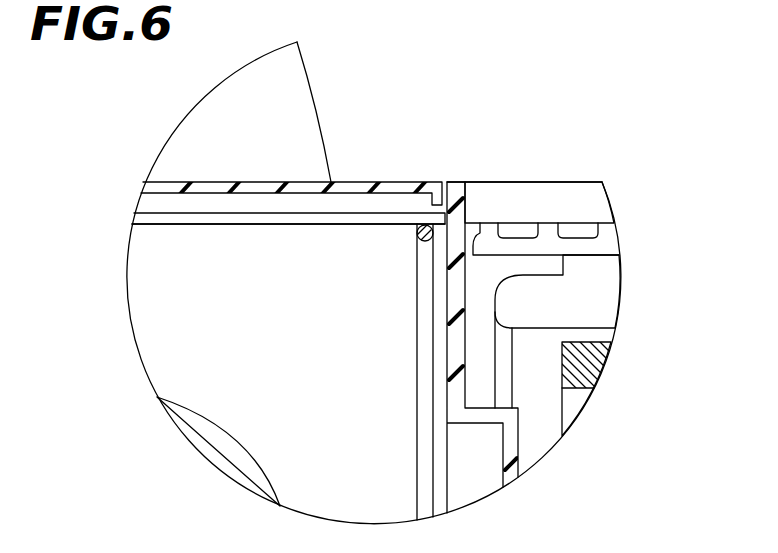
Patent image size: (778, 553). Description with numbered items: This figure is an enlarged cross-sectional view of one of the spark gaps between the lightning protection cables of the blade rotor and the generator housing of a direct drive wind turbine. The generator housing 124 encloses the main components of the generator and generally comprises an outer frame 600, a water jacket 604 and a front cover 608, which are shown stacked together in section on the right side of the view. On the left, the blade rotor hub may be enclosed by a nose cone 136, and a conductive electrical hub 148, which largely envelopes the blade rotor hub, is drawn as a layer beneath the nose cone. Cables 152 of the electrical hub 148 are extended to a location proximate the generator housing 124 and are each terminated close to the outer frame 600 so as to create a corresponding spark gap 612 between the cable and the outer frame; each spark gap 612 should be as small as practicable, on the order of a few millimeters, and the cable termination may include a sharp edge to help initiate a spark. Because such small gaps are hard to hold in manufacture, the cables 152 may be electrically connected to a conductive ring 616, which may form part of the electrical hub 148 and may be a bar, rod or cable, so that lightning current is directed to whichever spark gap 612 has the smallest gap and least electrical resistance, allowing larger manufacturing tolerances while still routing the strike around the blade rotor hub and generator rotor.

The generator housing 124 is at (537, 183).
The nose cone 136 is at (380, 182).
The electrical hub 148 is at (258, 225).
The cable 152 is at (185, 225).
The outer frame 600 is at (585, 183).
The water jacket 604 is at (617, 237).
The front cover 608 is at (448, 341).
The spark gap 612 is at (419, 241).
The conductive ring 616 is at (417, 422).